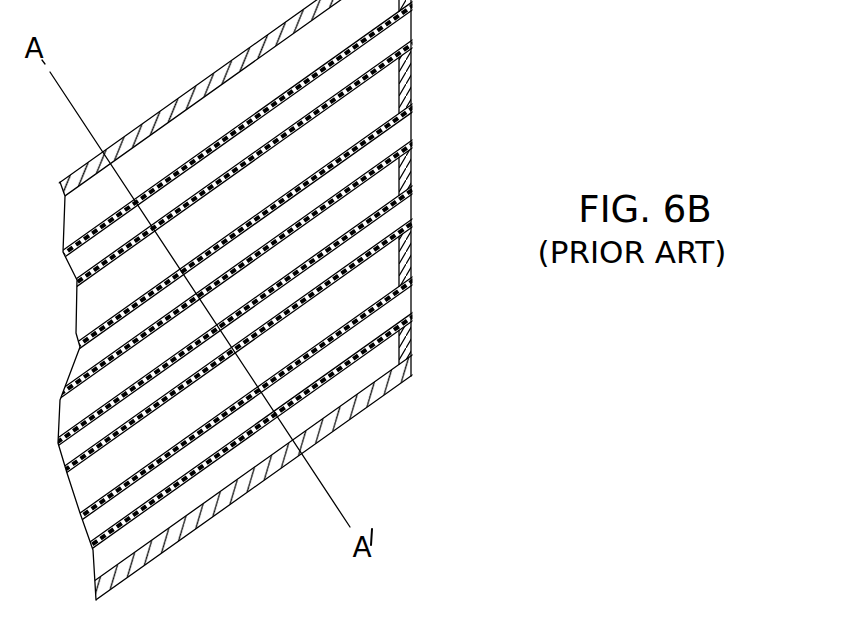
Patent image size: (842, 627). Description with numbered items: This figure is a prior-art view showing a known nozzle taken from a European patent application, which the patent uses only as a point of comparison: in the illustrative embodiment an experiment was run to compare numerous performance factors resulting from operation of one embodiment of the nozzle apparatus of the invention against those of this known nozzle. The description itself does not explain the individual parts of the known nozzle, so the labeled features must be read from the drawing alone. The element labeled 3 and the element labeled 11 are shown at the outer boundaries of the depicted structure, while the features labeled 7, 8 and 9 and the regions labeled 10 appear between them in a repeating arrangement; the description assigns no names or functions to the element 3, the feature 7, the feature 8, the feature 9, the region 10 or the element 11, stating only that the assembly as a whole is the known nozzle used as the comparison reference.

The outer cover layer 3 is at (199, 82).
The gap 7 is at (324, 106).
The electrode 8 is at (263, 215).
The electrode 9 is at (250, 122).
The piezoelectric layer 10 is at (340, 40).
The bottom cover layer 11 is at (240, 497).